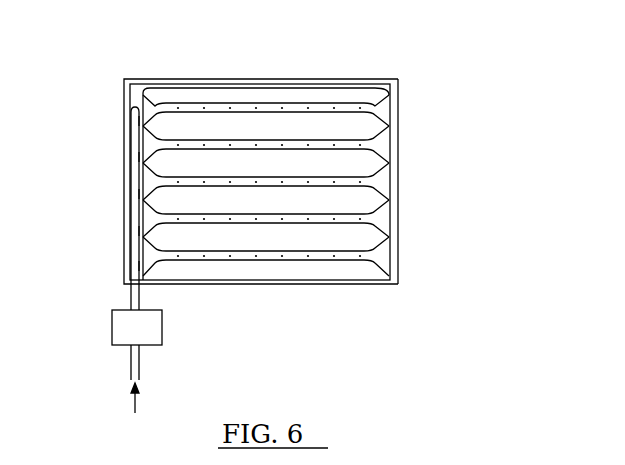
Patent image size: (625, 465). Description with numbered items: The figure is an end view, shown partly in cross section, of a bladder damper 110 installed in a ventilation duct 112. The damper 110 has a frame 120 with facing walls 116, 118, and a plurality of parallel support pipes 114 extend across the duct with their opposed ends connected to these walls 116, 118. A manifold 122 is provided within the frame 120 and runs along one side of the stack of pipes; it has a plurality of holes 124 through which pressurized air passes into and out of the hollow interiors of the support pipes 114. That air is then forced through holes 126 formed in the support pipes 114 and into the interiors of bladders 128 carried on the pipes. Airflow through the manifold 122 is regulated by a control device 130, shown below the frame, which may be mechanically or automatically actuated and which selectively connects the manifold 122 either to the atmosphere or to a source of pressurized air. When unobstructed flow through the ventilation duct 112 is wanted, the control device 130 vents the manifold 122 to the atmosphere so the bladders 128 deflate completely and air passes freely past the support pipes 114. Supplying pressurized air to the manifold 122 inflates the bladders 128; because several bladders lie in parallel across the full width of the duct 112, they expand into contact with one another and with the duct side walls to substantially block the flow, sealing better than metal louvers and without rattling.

The bladder damper 110 is at (152, 92).
The ventilation duct 112 is at (400, 117).
The support pipes 114 is at (250, 103).
The wall 116 is at (138, 249).
The wall 118 is at (391, 213).
The frame 120 is at (400, 165).
The manifold 122 is at (130, 136).
The holes 124 is at (129, 218).
The holes 126 is at (318, 106).
The bladders 128 is at (287, 268).
The control device 130 is at (122, 332).